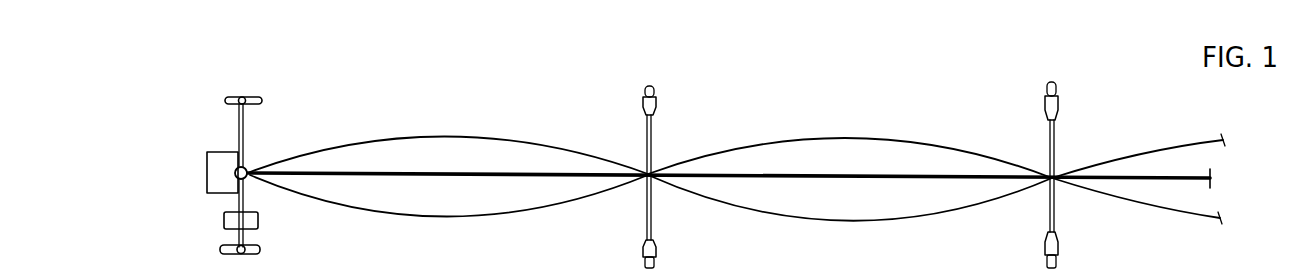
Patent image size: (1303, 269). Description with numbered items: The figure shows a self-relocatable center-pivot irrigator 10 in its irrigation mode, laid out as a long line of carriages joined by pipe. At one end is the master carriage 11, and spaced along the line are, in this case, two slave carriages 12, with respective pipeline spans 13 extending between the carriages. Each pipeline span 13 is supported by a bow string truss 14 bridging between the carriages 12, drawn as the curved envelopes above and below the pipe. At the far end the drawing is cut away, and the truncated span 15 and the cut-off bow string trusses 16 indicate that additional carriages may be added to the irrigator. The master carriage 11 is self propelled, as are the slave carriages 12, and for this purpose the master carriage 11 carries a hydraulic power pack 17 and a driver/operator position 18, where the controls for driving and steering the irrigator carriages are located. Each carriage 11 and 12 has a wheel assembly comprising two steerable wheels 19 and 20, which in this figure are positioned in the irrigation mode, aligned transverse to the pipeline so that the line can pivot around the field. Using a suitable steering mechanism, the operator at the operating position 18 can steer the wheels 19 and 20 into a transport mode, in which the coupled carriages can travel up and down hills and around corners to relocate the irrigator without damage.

The self-relocatable center-pivot irrigator 10 is at (699, 135).
The master carriage 11 is at (212, 139).
The slave carriage 12 is at (876, 147).
The pipeline span 13 is at (455, 172).
The bow string truss 14 is at (380, 140).
The span 15 is at (1188, 177).
The bow string truss 16 is at (1145, 152).
The hydraulic power pack 17 is at (225, 220).
The driver/operator position 18 is at (213, 165).
The steerable wheel 19 is at (646, 91).
The steerable wheel 20 is at (660, 262).